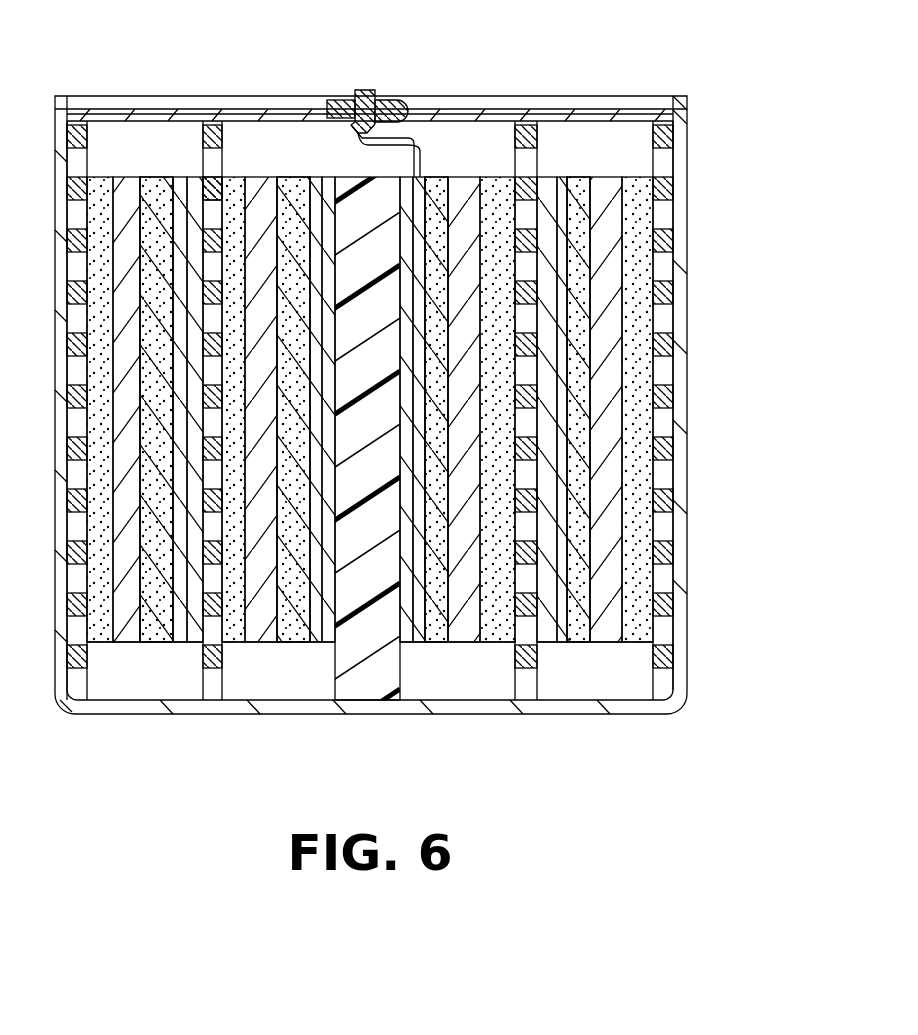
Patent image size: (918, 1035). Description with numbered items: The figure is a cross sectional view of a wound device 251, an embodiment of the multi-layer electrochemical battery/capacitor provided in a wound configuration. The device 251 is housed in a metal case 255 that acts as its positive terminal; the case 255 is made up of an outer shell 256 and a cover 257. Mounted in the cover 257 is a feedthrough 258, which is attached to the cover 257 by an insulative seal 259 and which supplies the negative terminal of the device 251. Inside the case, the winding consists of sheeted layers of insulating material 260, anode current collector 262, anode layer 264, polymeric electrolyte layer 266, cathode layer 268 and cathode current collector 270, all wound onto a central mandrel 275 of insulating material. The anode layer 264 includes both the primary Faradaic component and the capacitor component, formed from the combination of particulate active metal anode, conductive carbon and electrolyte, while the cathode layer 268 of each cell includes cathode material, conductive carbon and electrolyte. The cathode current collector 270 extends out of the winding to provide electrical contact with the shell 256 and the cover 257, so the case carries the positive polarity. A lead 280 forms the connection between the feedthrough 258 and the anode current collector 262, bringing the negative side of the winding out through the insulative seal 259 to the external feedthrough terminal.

The wound device 251 is at (417, 389).
The metal case 255 is at (687, 205).
The outer shell 256 is at (678, 322).
The cover 257 is at (565, 114).
The feedthrough 258 is at (365, 88).
The insulative seal 259 is at (345, 100).
The insulating material 260 is at (330, 187).
The anode current collector 262 is at (310, 180).
The anode layer 264 is at (292, 187).
The polymeric electrolyte layer 266 is at (260, 182).
The cathode layer 268 is at (217, 173).
The cathode current collector 270 is at (663, 688).
The mandrel 275 is at (360, 688).
The lead 280 is at (407, 142).